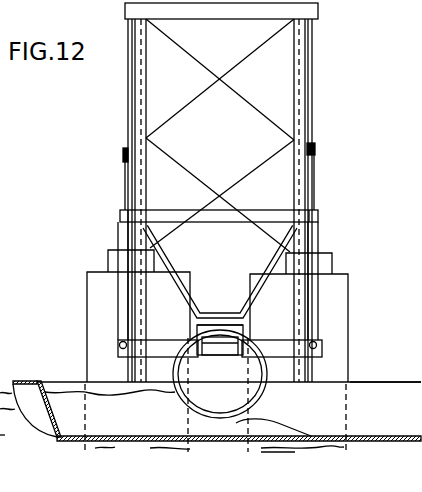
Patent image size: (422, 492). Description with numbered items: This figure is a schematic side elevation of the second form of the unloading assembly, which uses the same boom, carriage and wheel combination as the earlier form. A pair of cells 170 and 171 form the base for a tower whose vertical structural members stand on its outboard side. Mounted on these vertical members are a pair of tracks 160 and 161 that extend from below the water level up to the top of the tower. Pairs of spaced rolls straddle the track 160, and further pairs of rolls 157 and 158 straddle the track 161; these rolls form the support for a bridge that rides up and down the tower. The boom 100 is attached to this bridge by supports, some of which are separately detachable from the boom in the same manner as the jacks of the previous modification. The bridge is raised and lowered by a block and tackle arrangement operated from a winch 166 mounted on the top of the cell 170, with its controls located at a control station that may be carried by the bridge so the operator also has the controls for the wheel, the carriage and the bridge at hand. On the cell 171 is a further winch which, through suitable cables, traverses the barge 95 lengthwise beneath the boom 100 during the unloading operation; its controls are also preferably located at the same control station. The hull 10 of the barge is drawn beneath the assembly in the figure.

The boat hull 10 is at (211, 443).
The barge 95 is at (420, 415).
The boom 100 is at (205, 357).
The rolls 157 is at (317, 152).
The rolls 158 is at (318, 222).
The track 160 is at (128, 117).
The track 161 is at (311, 130).
The winch 166 is at (332, 263).
The cell 170 is at (348, 324).
The cell 171 is at (87, 303).